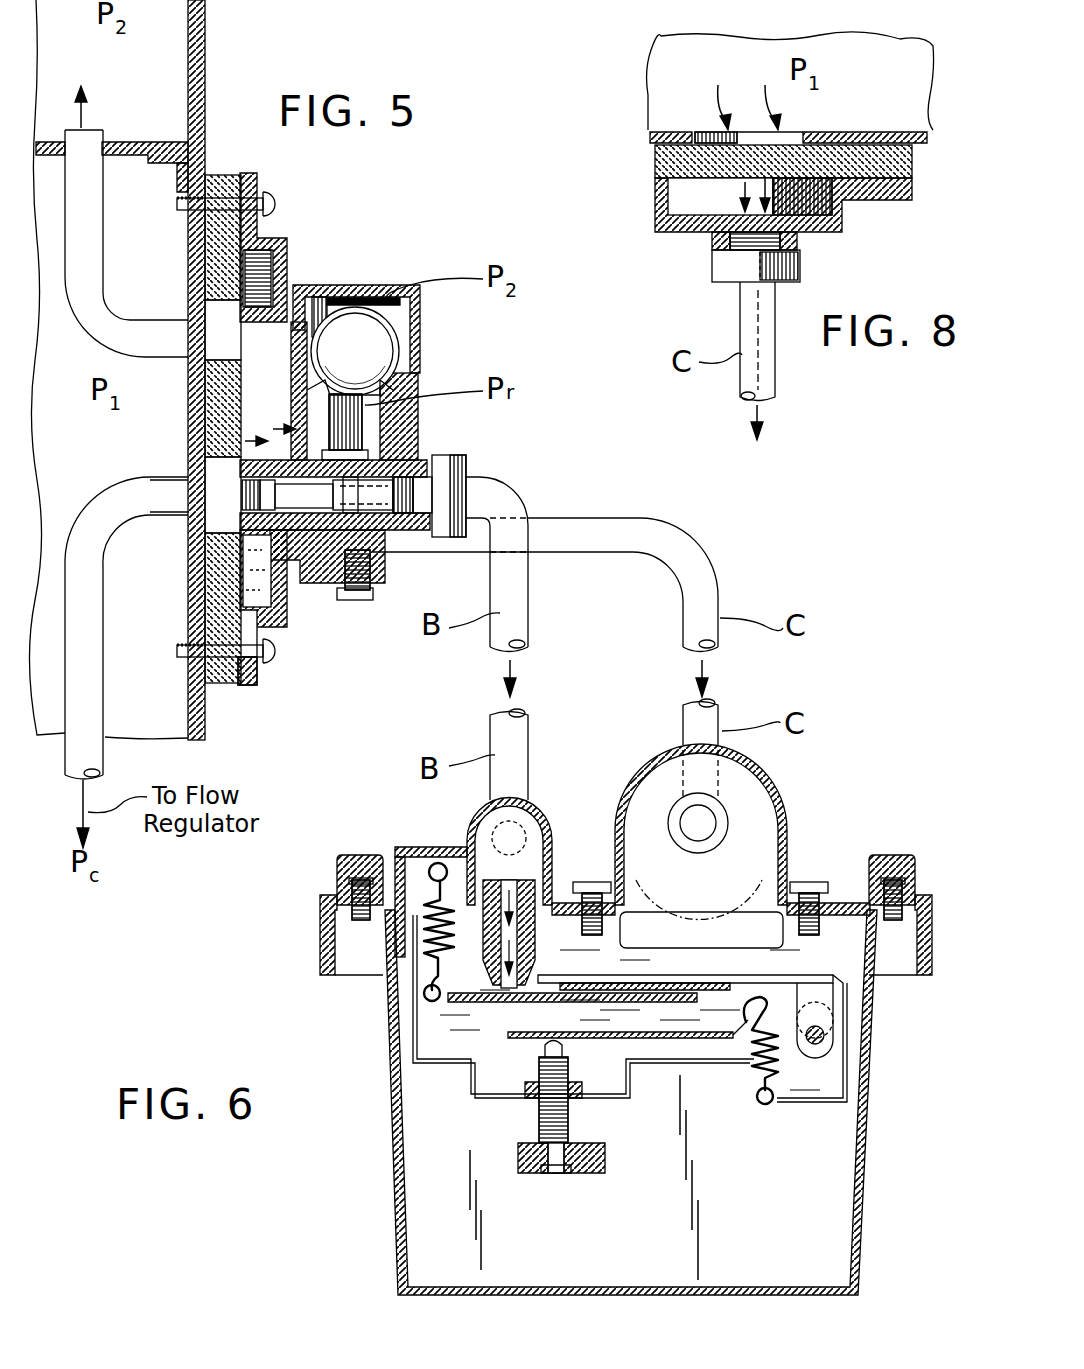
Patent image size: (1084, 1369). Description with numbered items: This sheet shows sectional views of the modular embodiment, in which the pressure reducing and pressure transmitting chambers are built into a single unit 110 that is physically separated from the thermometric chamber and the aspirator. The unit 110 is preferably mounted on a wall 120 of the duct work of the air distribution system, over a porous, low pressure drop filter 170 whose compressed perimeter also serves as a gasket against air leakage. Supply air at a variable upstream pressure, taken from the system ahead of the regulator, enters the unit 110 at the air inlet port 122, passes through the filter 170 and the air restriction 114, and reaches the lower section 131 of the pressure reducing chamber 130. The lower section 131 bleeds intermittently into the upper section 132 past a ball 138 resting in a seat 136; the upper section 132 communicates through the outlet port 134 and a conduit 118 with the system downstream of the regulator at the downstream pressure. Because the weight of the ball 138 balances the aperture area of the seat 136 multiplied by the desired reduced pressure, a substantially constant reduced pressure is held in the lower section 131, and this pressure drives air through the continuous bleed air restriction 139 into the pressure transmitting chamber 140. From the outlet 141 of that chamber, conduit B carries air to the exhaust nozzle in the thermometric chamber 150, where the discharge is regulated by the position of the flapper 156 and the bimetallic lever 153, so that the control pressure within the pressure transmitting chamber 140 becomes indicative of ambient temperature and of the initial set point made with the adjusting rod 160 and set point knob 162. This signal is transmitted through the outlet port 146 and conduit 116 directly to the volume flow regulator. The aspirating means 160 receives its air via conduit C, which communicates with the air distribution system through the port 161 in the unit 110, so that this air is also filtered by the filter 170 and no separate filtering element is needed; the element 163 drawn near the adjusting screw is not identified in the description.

In FIG. 5, the unit 110 is at (322, 276).
In FIG. 5, the air restriction 114 is at (205, 412).
In FIG. 5, the conduit 116 is at (100, 612).
In FIG. 5, the conduit 118 is at (93, 226).
In FIG. 5, the wall 120 is at (206, 21).
In FIG. 5, the air inlet port 122 is at (200, 440).
In FIG. 5, the pressure reducing chamber 130 is at (398, 388).
In FIG. 5, the lower section 131 is at (370, 430).
In FIG. 5, the upper section 132 is at (370, 290).
In FIG. 5, the outlet port 134 is at (285, 276).
In FIG. 5, the seat 136 is at (205, 382).
In FIG. 5, the ball 138 is at (373, 364).
In FIG. 5, the air restriction 139 is at (360, 456).
In FIG. 5, the pressure transmitting chamber 140 is at (378, 498).
In FIG. 5, the outlet 141 is at (428, 500).
In FIG. 5, the outlet port 146 is at (175, 496).
In FIG. 6, the thermometric chamber 150 is at (688, 1231).
In FIG. 6, the bimetallic lever 153 is at (668, 975).
In FIG. 6, the flapper 156 is at (470, 1020).
In FIG. 6, the aspirating means 160 is at (790, 803).
In FIG. 8, the port 161 is at (782, 257).
In FIG. 6, the set point knob 162 is at (585, 1180).
In FIG. 6, the adjusting screw 163 is at (545, 1117).
In FIG. 5, the filter 170 is at (222, 686).
In FIG. 8, the filter 170 is at (910, 165).